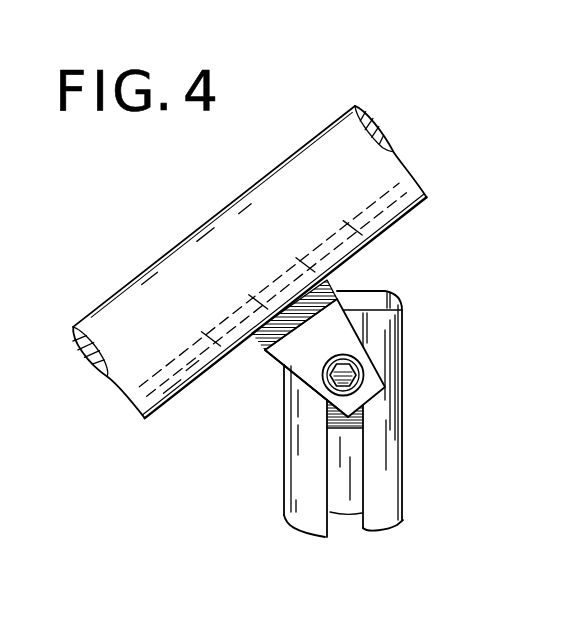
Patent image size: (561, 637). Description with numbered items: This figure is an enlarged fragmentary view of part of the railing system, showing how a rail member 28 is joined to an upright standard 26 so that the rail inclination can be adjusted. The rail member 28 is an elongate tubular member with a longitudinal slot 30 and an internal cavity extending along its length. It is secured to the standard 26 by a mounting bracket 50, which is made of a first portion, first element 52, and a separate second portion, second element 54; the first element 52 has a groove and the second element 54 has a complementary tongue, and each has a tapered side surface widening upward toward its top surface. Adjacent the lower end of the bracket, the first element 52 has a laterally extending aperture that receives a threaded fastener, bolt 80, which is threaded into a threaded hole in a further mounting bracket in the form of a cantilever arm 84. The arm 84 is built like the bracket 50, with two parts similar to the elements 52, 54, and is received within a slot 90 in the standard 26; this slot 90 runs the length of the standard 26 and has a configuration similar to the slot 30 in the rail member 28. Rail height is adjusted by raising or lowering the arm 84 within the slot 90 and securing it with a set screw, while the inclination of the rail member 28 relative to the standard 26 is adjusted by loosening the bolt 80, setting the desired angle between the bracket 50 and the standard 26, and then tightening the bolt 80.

The upright standard 26 is at (405, 417).
The rail member 28 is at (188, 235).
The longitudinal slot 30 is at (390, 186).
The mounting bracket 50 is at (263, 351).
The first element 52 is at (349, 349).
The second element 54 is at (330, 284).
The bolt 80 is at (347, 377).
The cantilever arm 84 is at (357, 428).
The slot 90 is at (347, 522).